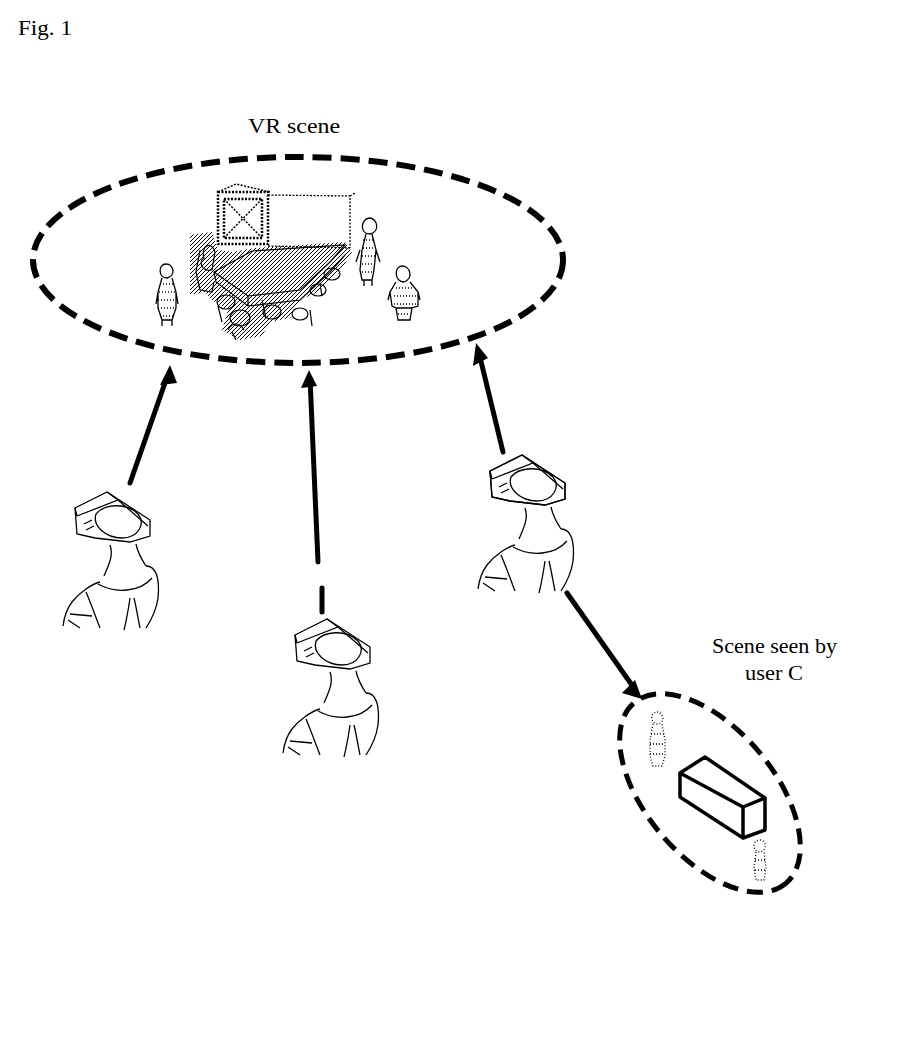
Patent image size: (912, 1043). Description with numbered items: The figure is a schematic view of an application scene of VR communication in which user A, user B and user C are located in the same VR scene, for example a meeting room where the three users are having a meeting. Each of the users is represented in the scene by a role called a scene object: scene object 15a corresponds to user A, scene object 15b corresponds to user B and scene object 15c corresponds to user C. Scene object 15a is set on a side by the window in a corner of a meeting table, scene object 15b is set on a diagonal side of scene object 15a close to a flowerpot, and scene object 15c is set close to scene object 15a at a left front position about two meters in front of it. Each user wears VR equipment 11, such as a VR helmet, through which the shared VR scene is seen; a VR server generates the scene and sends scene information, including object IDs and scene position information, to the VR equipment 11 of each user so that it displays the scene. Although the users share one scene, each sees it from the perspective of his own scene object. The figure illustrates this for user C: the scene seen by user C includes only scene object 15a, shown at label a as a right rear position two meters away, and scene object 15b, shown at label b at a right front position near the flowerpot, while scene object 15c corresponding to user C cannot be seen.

The VR equipment 11 is at (521, 458).
The scene object 15a is at (375, 239).
The scene object 15b is at (160, 284).
The scene object 15c is at (406, 281).
The user A is at (111, 584).
The user B is at (331, 709).
The user C is at (526, 541).
The object a seen by user C a is at (768, 850).
The avatar b seen by user C b is at (669, 731).